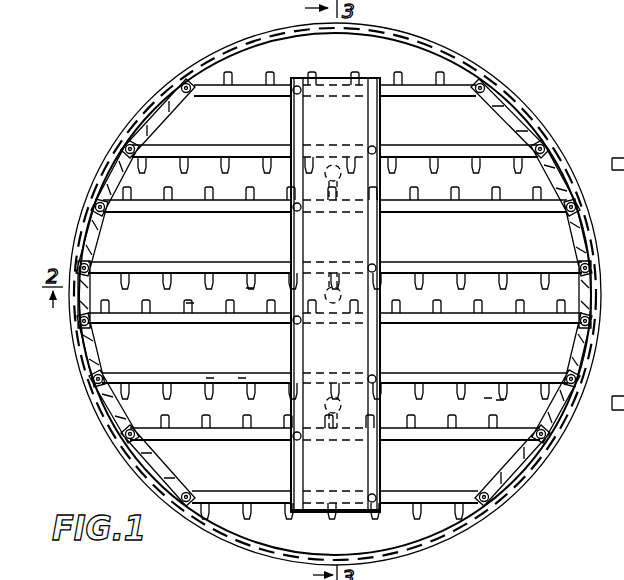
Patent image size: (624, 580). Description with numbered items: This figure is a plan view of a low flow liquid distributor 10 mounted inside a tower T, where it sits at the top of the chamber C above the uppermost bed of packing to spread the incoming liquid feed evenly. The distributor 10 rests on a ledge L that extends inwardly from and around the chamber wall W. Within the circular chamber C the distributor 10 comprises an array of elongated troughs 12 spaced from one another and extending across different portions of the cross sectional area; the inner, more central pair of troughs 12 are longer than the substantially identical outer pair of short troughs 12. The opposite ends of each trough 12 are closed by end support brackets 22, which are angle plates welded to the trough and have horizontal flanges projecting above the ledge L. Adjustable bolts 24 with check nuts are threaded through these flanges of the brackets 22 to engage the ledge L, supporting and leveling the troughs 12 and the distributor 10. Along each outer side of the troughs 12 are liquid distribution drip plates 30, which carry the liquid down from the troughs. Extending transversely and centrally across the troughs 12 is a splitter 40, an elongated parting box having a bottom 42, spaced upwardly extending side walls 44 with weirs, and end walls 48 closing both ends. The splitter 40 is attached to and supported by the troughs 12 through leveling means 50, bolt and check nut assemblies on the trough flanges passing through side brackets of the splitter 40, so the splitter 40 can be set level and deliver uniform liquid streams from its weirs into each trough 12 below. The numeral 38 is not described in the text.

The liquid distributor 10 is at (455, 83).
The trough 12 is at (247, 82).
The end support bracket 22 is at (500, 102).
The adjustable bolt 24 is at (544, 143).
The liquid distribution drip plate 30 is at (227, 182).
The tray support 38 is at (242, 378).
The splitter 40 is at (304, 257).
The bottom 42 is at (346, 363).
The side wall 44 is at (365, 249).
The end wall 48 is at (312, 510).
The leveling means 50 is at (376, 267).
The tower T is at (136, 110).
The chamber wall W is at (103, 163).
The chamber C is at (112, 292).
The ledge L is at (102, 405).